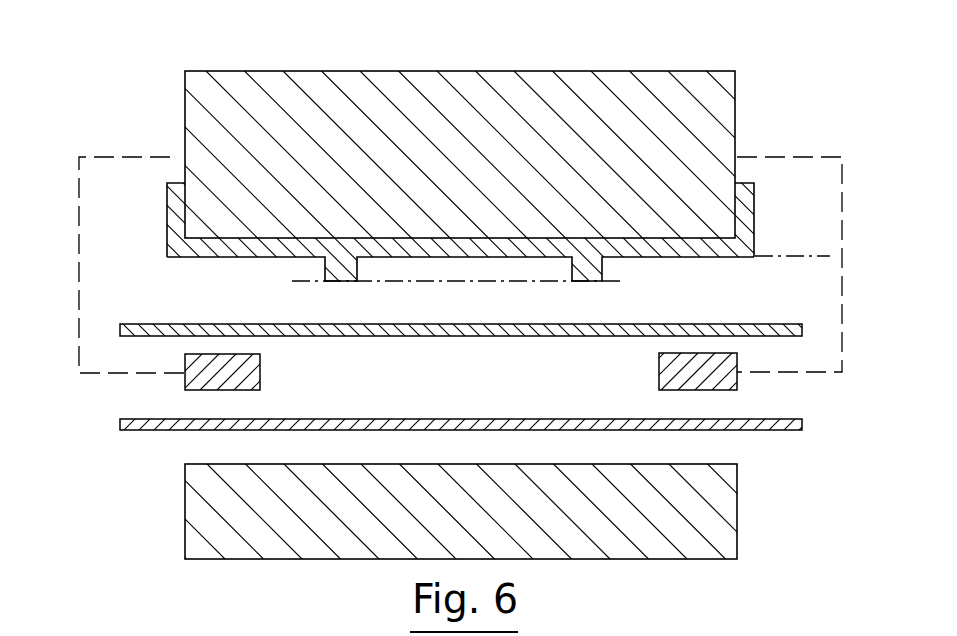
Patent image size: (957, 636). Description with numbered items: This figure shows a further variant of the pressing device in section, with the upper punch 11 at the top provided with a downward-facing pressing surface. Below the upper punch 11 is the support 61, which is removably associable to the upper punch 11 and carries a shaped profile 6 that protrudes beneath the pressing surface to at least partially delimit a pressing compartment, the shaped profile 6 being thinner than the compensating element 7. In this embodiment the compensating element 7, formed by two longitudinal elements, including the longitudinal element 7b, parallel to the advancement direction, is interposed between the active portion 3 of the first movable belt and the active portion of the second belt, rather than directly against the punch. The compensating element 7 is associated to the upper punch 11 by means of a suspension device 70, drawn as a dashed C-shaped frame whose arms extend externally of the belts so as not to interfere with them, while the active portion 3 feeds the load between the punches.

The upper punch 11 is at (342, 71).
The shaped profile 6 is at (478, 318).
The support 61 is at (181, 181).
The suspension device 70 is at (79, 219).
The active portion 3 is at (142, 427).
The compensating element 7 is at (253, 383).
The longitudinal element 7b is at (673, 368).